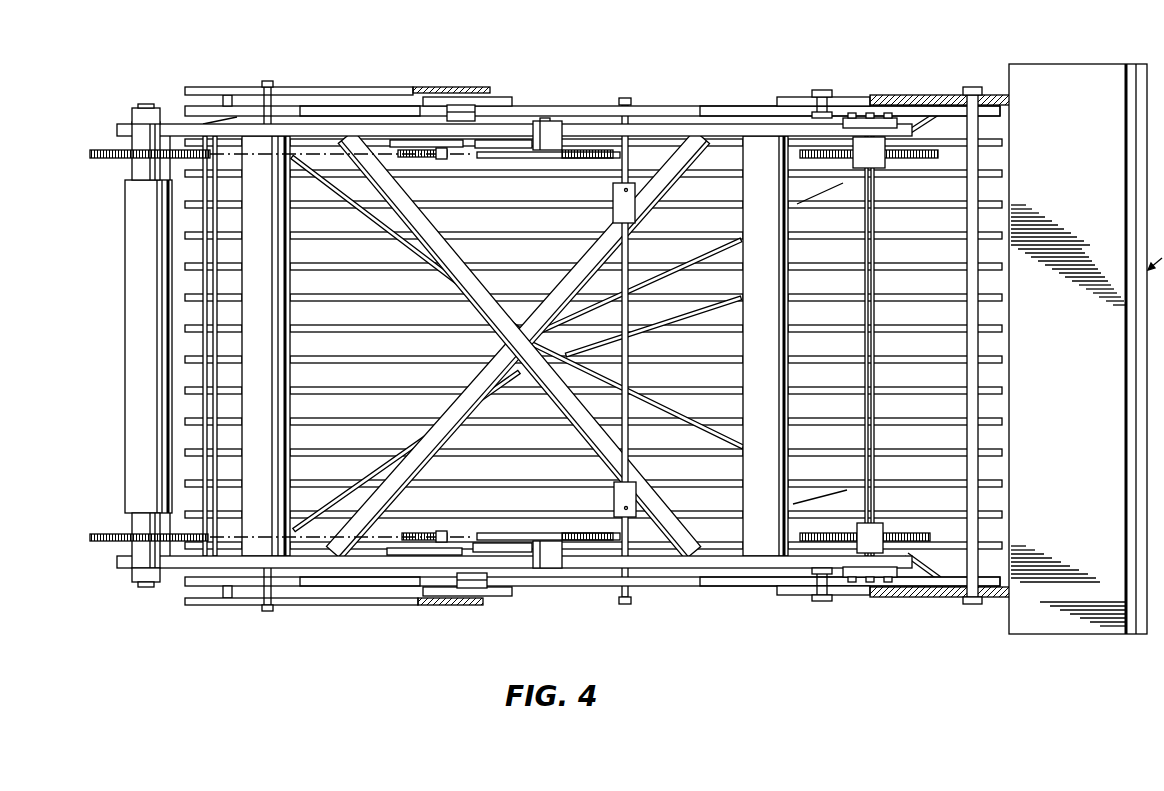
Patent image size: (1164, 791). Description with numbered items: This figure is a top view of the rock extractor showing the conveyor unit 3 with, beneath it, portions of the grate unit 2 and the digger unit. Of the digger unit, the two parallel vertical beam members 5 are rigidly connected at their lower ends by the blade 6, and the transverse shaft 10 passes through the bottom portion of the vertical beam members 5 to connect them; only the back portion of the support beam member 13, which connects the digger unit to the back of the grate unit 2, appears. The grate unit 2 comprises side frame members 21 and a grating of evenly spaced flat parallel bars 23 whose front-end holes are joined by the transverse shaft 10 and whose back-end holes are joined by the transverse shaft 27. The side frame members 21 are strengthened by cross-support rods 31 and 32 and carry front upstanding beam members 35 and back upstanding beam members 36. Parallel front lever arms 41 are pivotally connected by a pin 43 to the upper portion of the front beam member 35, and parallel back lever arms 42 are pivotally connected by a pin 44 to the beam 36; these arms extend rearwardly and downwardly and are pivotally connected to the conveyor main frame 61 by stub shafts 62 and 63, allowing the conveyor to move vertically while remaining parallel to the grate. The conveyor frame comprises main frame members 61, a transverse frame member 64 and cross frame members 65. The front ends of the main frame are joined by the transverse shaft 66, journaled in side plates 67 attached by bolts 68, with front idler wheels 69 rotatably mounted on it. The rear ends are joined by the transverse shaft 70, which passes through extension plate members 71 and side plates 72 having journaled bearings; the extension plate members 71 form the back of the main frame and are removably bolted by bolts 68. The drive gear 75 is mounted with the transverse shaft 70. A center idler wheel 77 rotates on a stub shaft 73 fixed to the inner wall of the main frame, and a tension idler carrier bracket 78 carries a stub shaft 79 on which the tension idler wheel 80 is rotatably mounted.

The grate unit 2 is at (557, 606).
The conveyor unit 3 is at (435, 311).
The vertical beam members 5 is at (955, 598).
The blade 6 is at (1085, 349).
The transverse shaft 10 is at (972, 87).
The support beam member 13 is at (345, 87).
The side frame members 21 is at (185, 108).
The flat parallel bars 23 is at (500, 149).
The transverse shaft 27 is at (218, 351).
The cross-support rod 31 is at (636, 394).
The cross-support rod 32 is at (718, 250).
The front upstanding beam members 35 is at (795, 97).
The back upstanding beam members 36 is at (505, 97).
The front lever arms 41 is at (740, 106).
The back lever arms 42 is at (392, 106).
The pin 43 is at (824, 90).
The pin 44 is at (452, 105).
The conveyor main frame 61 is at (640, 122).
The stub shaft 62 is at (625, 98).
The stub shaft 63 is at (270, 82).
The transverse frame member 64 is at (268, 251).
The cross frame members 65 is at (690, 150).
The transverse shaft 66 is at (875, 251).
The side plates 67 is at (880, 118).
The bolts 68 is at (855, 113).
The front idler wheels 69 is at (890, 158).
The transverse shaft 70 is at (125, 240).
The extension plate members 71 is at (150, 106).
The side plates 72 is at (135, 110).
The stub shaft 73 is at (548, 150).
The drive gear 75 is at (100, 150).
The center idler wheel 77 is at (585, 150).
The tension idler carrier bracket 78 is at (420, 148).
The stub shaft 79 is at (441, 159).
The tension idler wheel 80 is at (430, 158).